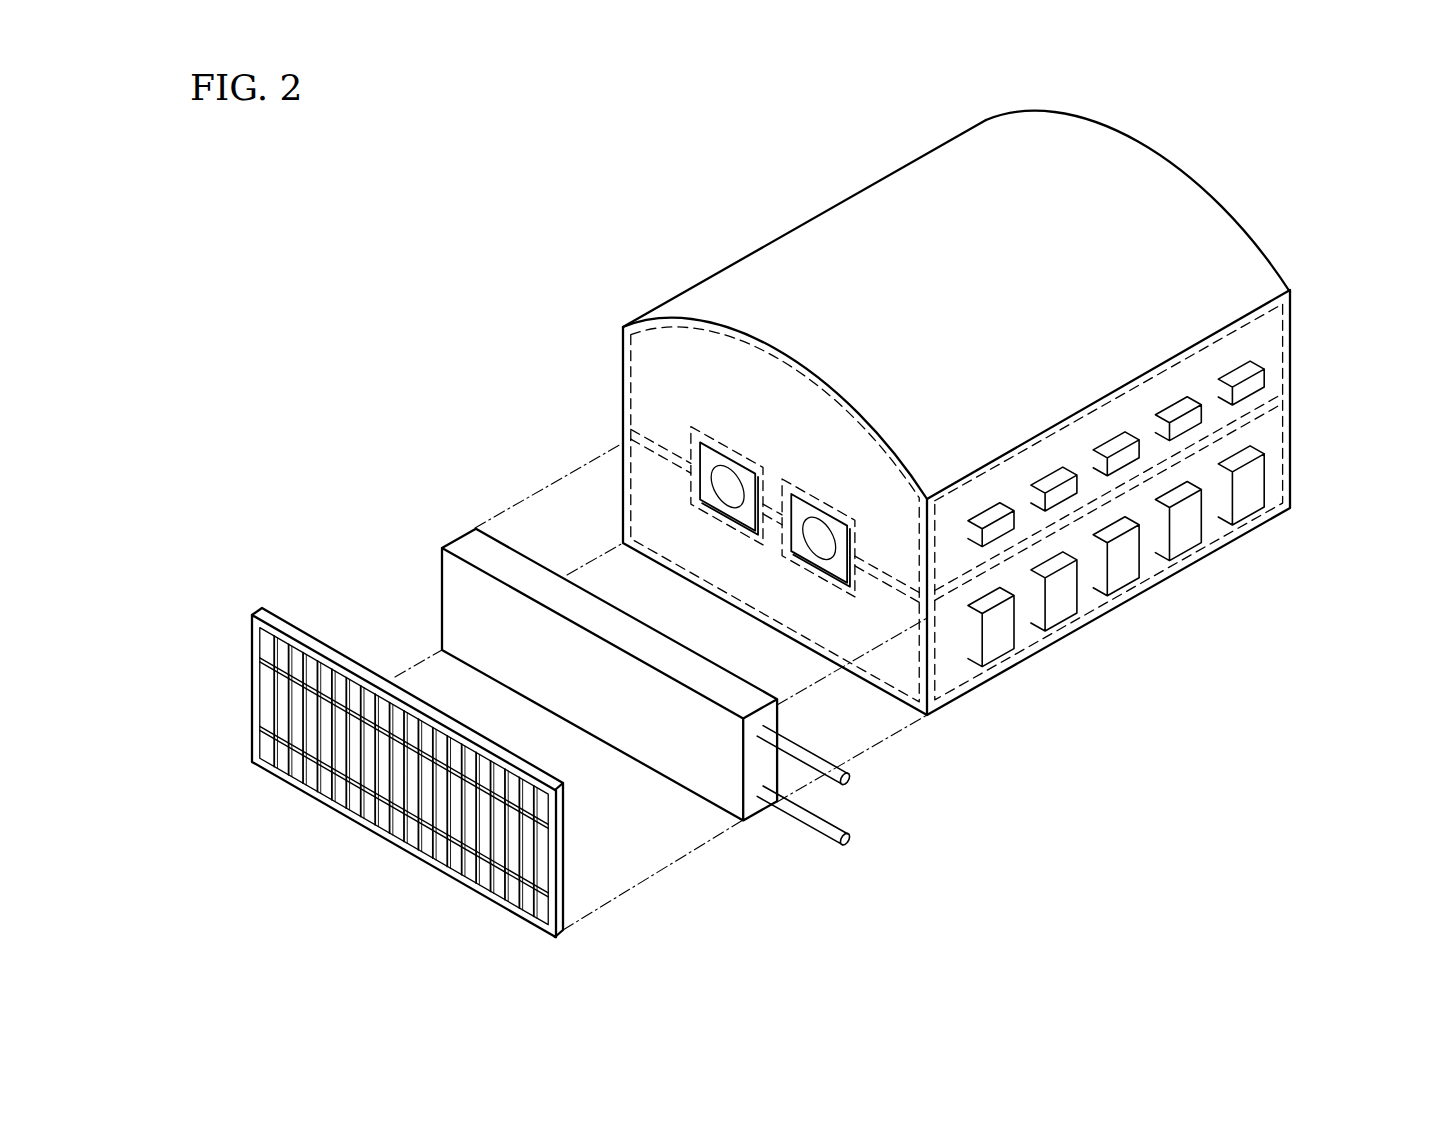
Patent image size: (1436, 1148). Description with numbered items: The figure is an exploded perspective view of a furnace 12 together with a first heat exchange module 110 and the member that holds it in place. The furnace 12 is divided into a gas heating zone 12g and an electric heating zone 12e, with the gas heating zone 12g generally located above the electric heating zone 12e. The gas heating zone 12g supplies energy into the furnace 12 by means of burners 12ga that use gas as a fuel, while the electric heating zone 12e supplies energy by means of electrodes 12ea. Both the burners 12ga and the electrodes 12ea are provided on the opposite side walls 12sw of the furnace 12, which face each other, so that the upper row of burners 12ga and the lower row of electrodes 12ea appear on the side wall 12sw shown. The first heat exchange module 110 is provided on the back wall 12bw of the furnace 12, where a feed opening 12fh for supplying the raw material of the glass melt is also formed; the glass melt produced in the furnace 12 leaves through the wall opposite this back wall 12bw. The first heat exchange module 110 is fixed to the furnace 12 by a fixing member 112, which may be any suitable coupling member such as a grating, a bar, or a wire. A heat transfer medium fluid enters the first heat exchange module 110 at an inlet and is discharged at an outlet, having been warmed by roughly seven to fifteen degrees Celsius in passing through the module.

The furnace 12 is at (964, 385).
The back wall 12bw is at (686, 362).
The side walls 12sw is at (1236, 350).
The gas heating zone 12g is at (625, 368).
The burners 12ga is at (1260, 380).
The electric heating zone 12e is at (630, 470).
The electrodes 12ea is at (1260, 492).
The feed opening 12fh is at (743, 517).
The first heat exchange module 110 is at (680, 679).
The fixing member 112 is at (280, 612).